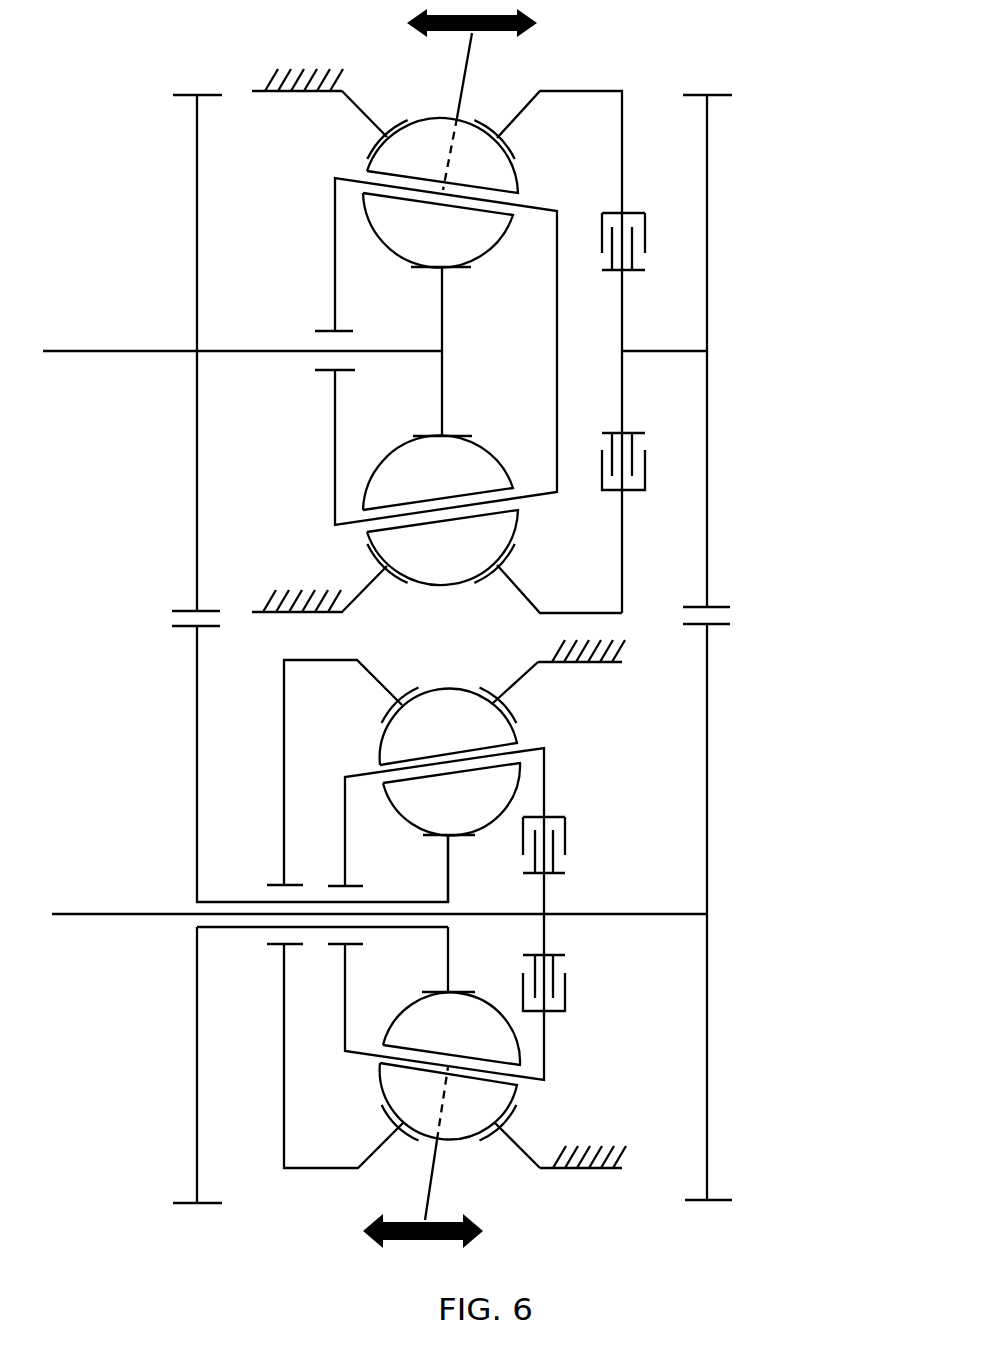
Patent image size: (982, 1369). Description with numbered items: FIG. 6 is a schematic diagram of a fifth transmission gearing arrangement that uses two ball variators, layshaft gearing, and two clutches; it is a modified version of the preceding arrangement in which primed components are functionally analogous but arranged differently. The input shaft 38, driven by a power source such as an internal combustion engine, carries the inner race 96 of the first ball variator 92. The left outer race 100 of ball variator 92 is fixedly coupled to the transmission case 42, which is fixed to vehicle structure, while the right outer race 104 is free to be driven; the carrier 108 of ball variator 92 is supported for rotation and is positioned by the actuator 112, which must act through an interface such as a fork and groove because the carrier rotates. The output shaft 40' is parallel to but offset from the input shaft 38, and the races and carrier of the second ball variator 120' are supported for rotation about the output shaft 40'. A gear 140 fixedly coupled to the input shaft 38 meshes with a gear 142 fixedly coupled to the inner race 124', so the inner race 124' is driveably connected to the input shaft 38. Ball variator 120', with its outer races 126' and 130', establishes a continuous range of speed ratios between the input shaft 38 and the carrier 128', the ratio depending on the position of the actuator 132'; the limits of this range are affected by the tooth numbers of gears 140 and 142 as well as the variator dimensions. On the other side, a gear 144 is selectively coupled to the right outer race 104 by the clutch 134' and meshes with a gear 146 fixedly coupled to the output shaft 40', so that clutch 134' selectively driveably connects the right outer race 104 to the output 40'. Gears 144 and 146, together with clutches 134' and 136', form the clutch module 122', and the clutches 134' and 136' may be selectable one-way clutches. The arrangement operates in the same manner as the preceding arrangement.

The input shaft 38 is at (168, 350).
The output shaft 40' is at (379, 872).
The transmission case 42 is at (267, 90).
The ball variator 92 is at (324, 160).
The inner race 96 is at (443, 325).
The left outer race 100 is at (356, 105).
The right outer race 104 is at (522, 107).
The carrier 108 is at (336, 267).
The actuator 112 is at (487, 35).
The ball variator 120' is at (319, 914).
The clutch module 122' is at (471, 1012).
The inner race 124' is at (478, 913).
The outer race 126' is at (554, 701).
The carrier 128' is at (436, 914).
The outer race 130' is at (373, 900).
The actuator 132' is at (435, 1157).
The clutch 134' is at (644, 371).
The clutch 136' is at (592, 914).
The gear 140 is at (197, 445).
The gear 142 is at (195, 727).
The gear 144 is at (707, 460).
The gear 146 is at (708, 733).